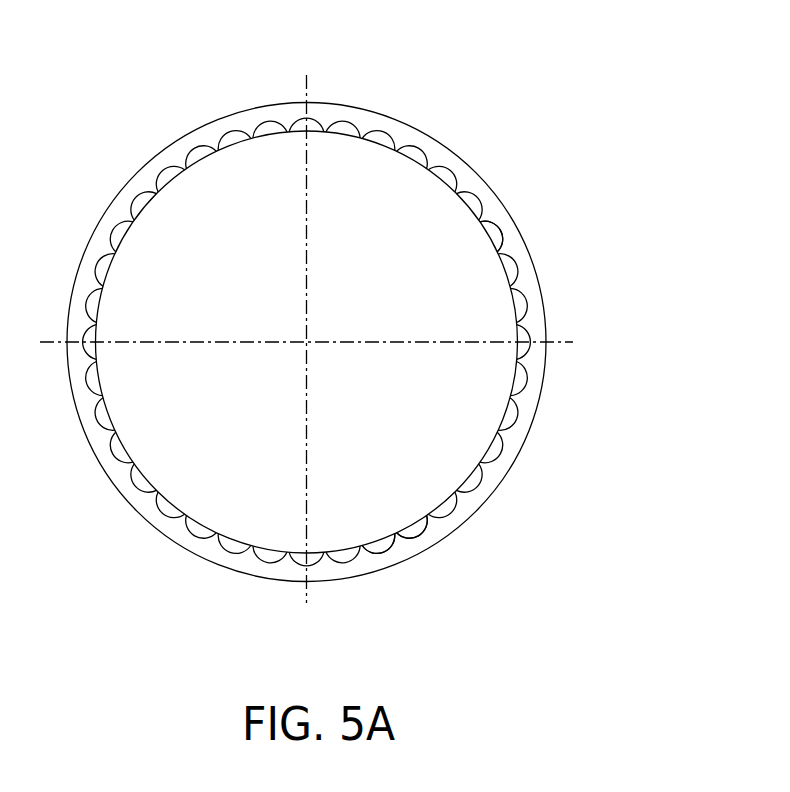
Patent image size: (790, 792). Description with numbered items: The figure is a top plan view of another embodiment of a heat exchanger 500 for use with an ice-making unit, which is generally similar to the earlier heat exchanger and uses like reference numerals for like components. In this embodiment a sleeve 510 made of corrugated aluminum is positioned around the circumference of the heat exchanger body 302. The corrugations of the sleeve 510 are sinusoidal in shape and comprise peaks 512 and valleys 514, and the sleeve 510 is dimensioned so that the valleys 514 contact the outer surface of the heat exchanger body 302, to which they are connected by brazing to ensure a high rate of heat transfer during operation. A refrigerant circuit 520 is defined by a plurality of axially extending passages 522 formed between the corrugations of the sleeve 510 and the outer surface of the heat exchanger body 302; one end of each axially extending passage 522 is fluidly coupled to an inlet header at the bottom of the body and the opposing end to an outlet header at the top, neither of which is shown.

The heat exchanger 500 is at (143, 131).
The heat exchanger body 302 is at (400, 147).
The sleeve 510 is at (450, 157).
The peaks 512 is at (508, 220).
The valleys 514 is at (500, 250).
The refrigerant circuit 520 is at (377, 553).
The axially extending passages 522 is at (418, 535).